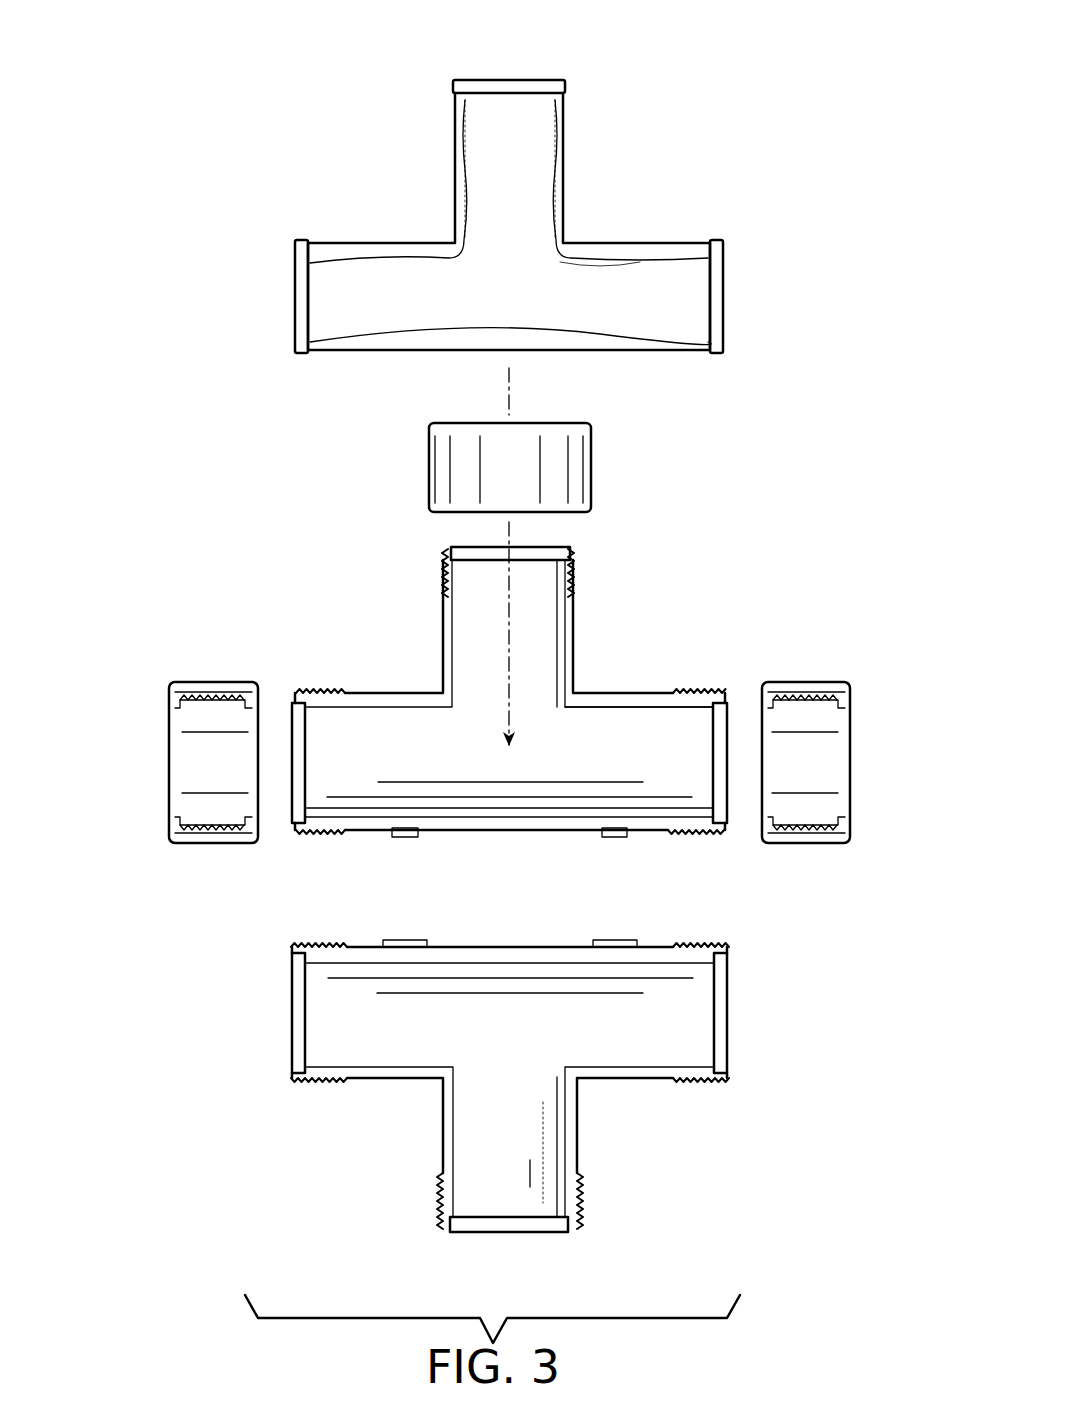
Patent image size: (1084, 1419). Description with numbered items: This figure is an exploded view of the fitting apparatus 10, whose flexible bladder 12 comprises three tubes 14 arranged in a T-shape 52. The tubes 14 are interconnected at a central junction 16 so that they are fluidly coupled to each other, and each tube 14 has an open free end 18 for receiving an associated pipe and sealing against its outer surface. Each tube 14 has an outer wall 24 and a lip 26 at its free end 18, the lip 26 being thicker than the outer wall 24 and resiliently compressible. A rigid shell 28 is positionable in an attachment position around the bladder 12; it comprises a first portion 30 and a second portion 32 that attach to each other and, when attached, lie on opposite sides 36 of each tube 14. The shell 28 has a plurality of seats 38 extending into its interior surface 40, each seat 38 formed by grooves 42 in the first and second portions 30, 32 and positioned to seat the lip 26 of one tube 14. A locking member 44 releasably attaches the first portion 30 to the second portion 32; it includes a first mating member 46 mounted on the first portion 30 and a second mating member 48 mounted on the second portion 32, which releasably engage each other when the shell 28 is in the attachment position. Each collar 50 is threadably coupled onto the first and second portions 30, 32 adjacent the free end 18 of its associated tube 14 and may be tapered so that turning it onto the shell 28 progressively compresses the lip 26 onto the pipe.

The fitting apparatus 10 is at (215, 235).
The bladder 12 is at (612, 212).
The tube 14 is at (487, 118).
The central junction 16 is at (608, 280).
The free end 18 is at (500, 72).
The outer wall 24 is at (537, 163).
The lip 26 is at (565, 82).
The shell 28 is at (658, 668).
The first portion 30 is at (618, 1084).
The second portion 32 is at (700, 682).
The opposite sides 36 is at (482, 157).
The seat 38 is at (294, 1040).
The interior surface 40 is at (611, 730).
The groove 42 is at (548, 548).
The locking member 44 is at (318, 888).
The first mating member 46 is at (407, 838).
The second mating member 48 is at (410, 937).
The collar 50 is at (448, 475).
The T-shape 52 is at (625, 103).